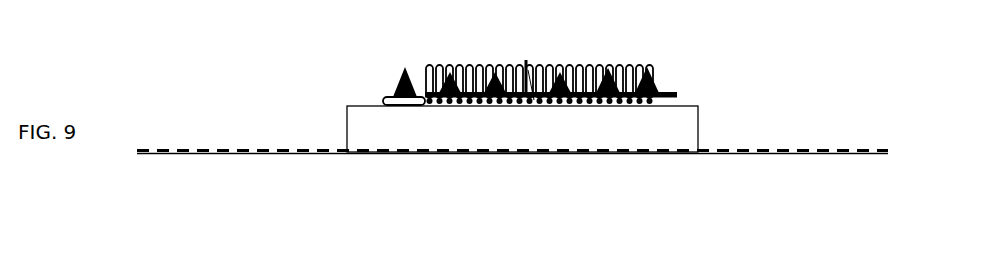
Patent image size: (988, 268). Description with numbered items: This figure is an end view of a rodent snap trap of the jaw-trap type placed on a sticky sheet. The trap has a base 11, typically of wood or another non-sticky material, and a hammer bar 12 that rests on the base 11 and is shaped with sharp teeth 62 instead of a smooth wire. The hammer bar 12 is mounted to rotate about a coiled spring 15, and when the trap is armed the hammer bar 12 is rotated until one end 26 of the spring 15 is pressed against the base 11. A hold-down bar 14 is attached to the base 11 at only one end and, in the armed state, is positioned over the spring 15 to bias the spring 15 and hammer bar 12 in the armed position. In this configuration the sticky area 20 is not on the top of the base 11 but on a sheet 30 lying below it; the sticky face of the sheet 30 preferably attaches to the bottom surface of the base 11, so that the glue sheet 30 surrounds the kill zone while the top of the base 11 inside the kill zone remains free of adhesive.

The base 11 is at (475, 138).
The hammer bar 12 is at (668, 92).
The hold-down bar 14 is at (526, 60).
The coiled spring 15 is at (470, 62).
The sticky area 20 is at (803, 150).
The end of the spring 26 is at (388, 97).
The sheet 30 is at (748, 154).
The sharp teeth 62 is at (403, 67).